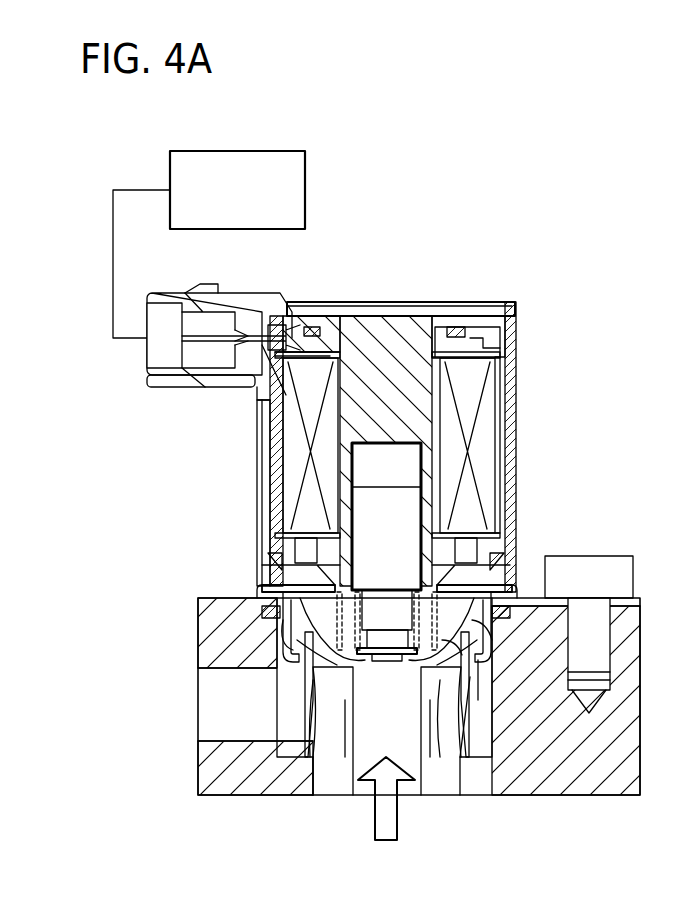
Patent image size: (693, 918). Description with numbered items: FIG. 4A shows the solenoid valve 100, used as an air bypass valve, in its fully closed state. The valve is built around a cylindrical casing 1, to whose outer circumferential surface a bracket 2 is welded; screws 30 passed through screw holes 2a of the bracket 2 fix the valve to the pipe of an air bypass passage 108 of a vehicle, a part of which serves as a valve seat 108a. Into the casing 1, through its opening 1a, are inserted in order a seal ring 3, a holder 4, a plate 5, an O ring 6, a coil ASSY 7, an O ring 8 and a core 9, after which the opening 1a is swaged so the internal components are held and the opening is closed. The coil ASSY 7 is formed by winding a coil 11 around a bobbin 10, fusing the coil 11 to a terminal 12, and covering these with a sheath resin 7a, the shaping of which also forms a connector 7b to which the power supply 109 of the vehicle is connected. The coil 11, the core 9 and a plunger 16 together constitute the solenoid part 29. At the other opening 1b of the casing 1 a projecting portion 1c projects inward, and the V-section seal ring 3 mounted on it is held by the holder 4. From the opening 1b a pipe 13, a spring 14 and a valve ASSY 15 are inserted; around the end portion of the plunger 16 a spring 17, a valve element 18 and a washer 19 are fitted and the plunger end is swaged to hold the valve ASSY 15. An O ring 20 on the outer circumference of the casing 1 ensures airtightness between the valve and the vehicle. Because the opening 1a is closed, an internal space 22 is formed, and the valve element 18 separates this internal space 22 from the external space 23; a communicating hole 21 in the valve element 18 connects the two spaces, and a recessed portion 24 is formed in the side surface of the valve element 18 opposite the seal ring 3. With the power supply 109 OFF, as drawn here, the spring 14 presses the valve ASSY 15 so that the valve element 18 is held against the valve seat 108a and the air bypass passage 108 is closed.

The solenoid valve 100 is at (432, 243).
The power supply 109 is at (291, 151).
The terminal 12 is at (228, 320).
The connector 7b is at (152, 357).
The opening 1a is at (452, 330).
The O ring 8 is at (456, 331).
The core 9 is at (415, 332).
The bobbin 10 is at (485, 353).
The coil 11 is at (512, 385).
The casing 1 is at (516, 399).
The coil ASSY 7 is at (516, 428).
The sheath resin 7a is at (498, 455).
The solenoid part 29 is at (254, 440).
The pipe 13 is at (345, 478).
The plunger 16 is at (385, 502).
The spring 14 is at (339, 600).
The valve ASSY 15 is at (289, 577).
The O ring 20 is at (263, 610).
The internal space 22 is at (282, 640).
The seal ring 3 is at (300, 690).
The air bypass passage 108 is at (212, 726).
The valve seat 108a is at (300, 795).
The communicating hole 21 is at (254, 757).
The washer 19 is at (363, 760).
The recessed portion 24 is at (432, 760).
The external space 23 is at (445, 740).
The valve element 18 is at (478, 700).
The opening 1b is at (462, 640).
The projecting portion 1c is at (480, 650).
The spring 17 is at (500, 618).
The O ring 6 is at (507, 575).
The plate 5 is at (500, 590).
The holder 4 is at (490, 590).
The bracket 2 is at (639, 599).
The screw hole 2a is at (596, 595).
The screw 30 is at (626, 554).